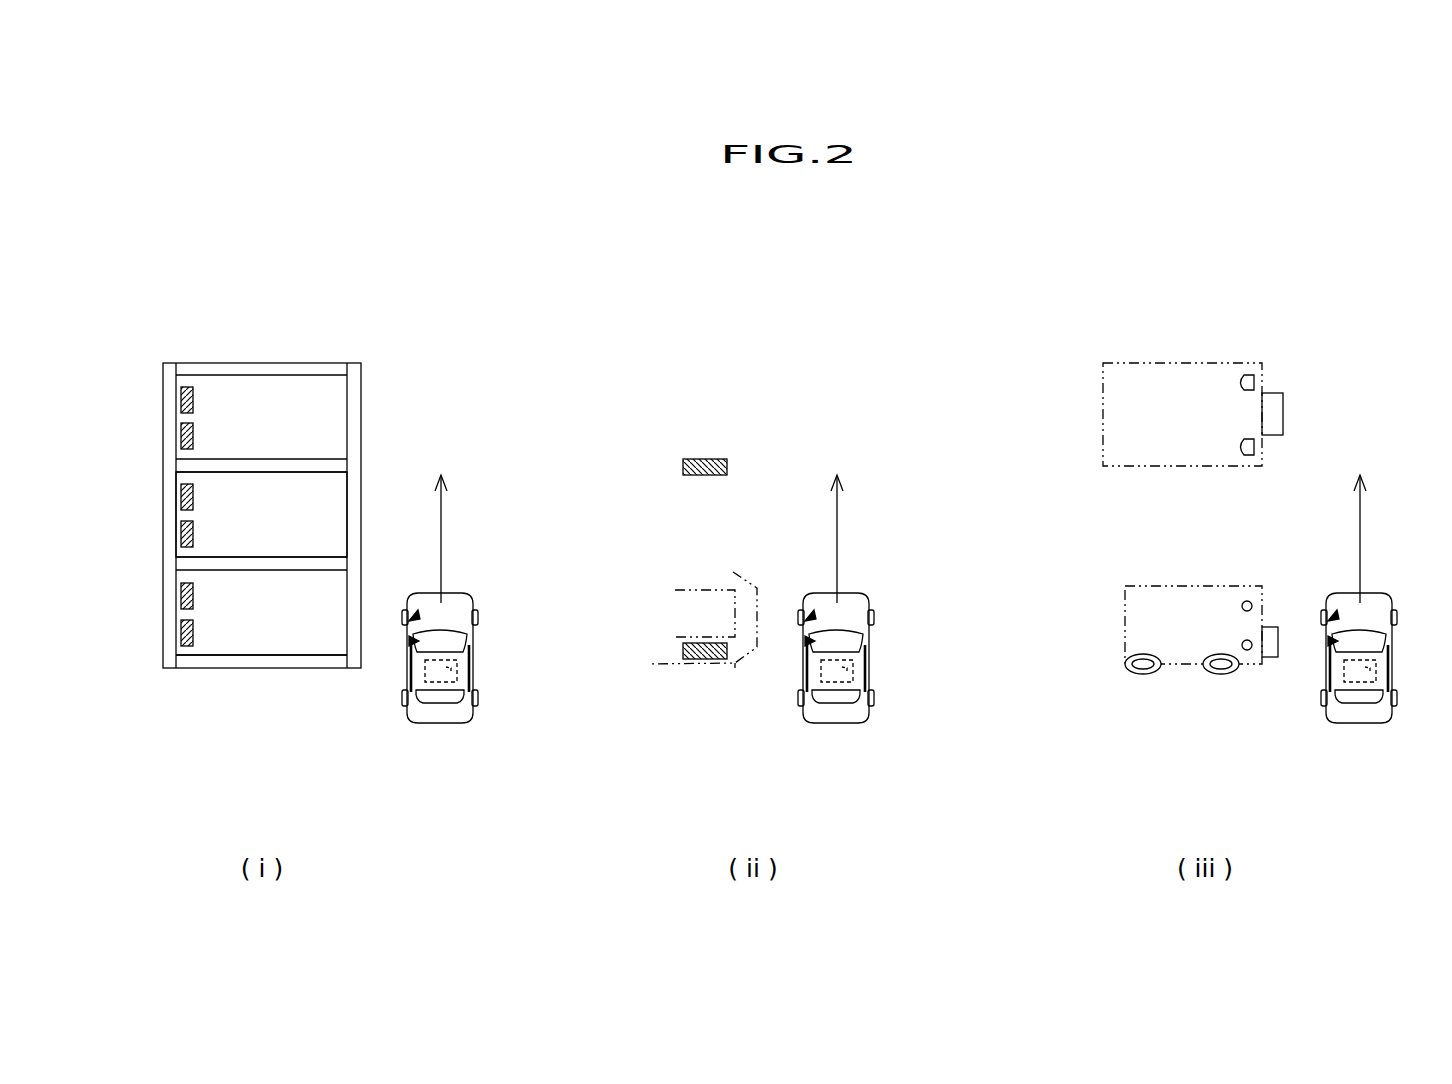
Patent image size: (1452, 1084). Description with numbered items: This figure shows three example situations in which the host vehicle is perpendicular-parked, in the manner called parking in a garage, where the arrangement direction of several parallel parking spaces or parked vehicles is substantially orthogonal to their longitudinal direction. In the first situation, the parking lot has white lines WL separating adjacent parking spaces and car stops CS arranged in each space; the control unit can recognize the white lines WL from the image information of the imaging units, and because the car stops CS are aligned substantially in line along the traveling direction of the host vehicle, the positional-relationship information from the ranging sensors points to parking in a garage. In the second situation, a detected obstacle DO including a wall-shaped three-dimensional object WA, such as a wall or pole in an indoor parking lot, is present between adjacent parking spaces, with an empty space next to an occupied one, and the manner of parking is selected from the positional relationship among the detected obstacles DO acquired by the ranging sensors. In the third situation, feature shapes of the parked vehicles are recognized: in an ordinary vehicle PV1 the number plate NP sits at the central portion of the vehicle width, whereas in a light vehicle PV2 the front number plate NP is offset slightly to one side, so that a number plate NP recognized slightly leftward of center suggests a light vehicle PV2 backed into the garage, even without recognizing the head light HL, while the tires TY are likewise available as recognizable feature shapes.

The car stop CS is at (182, 632).
The white line WL is at (255, 663).
The wall-shaped three-dimensional object WA is at (706, 457).
The detected obstacle DO is at (735, 668).
The ordinary vehicle PV1 is at (1178, 362).
The light vehicle PV2 is at (1123, 608).
The head light HL is at (1243, 377).
The number plate NP is at (1273, 403).
The tire TY is at (1147, 676).